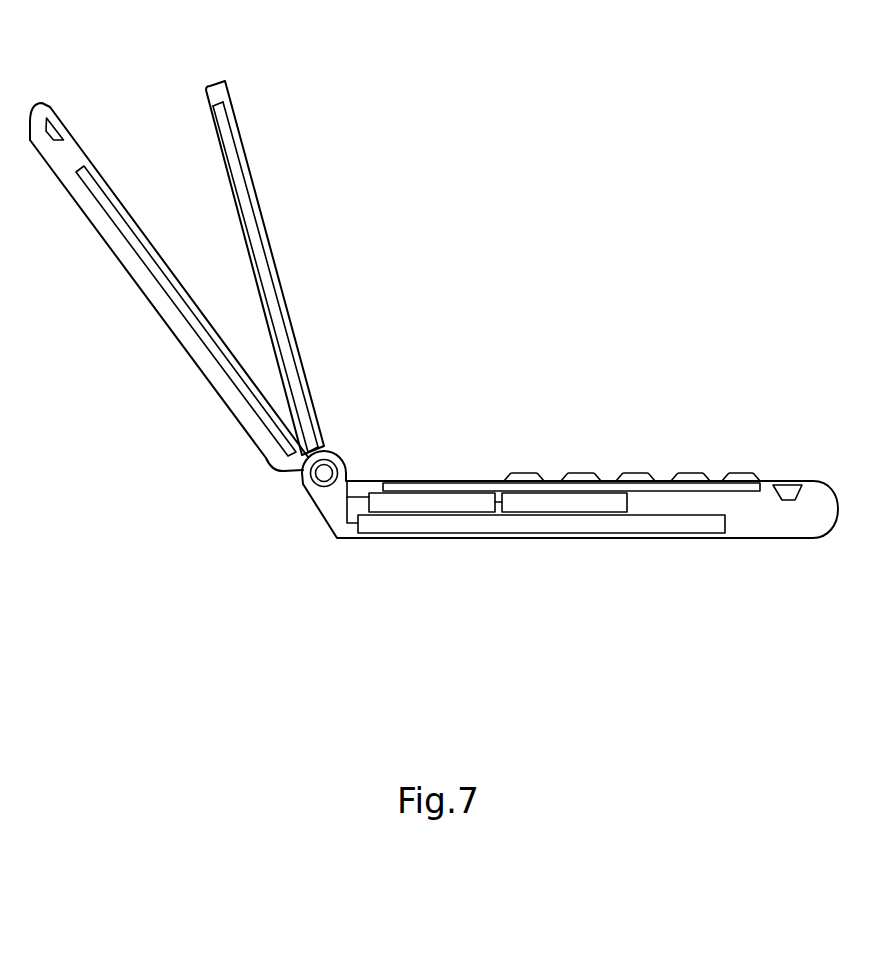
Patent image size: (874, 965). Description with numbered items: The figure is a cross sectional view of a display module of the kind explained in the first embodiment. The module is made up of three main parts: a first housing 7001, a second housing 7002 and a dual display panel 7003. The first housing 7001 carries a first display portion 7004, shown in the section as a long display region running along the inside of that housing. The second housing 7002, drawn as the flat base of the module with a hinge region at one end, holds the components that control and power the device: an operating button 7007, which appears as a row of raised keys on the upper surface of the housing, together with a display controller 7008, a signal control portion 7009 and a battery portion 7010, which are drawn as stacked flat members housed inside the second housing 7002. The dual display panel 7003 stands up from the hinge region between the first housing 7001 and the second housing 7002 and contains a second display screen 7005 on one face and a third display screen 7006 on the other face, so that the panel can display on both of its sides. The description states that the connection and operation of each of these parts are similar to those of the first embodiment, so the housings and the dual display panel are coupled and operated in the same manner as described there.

The first housing 7001 is at (130, 281).
The second housing 7002 is at (330, 509).
The dual display panel 7003 is at (222, 82).
The first display portion 7004 is at (129, 213).
The second display screen 7005 is at (267, 226).
The third display screen 7006 is at (236, 196).
The operating button 7007 is at (578, 473).
The display controller 7008 is at (412, 502).
The signal control portion 7009 is at (535, 502).
The battery portion 7010 is at (630, 524).